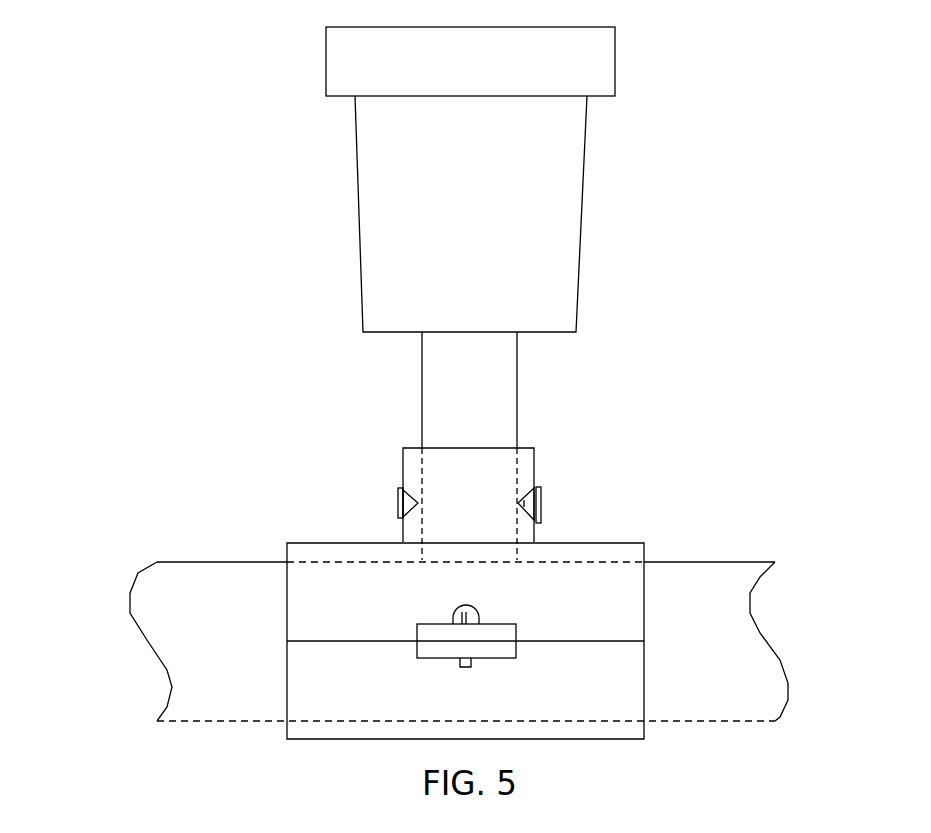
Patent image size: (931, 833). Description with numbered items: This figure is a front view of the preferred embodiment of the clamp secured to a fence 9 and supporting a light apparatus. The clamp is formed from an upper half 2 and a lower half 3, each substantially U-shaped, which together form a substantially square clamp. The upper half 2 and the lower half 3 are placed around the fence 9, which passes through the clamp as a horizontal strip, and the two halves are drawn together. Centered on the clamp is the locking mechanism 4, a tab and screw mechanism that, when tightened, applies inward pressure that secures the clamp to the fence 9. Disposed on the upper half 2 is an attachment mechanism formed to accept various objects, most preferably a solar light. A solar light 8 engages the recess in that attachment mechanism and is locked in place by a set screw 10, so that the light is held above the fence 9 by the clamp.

The upper half 2 is at (341, 617).
The lower half 3 is at (558, 670).
The locking mechanism 4 is at (611, 563).
The solar light 8 is at (549, 237).
The fence 9 is at (428, 545).
The set screw 10 is at (460, 451).